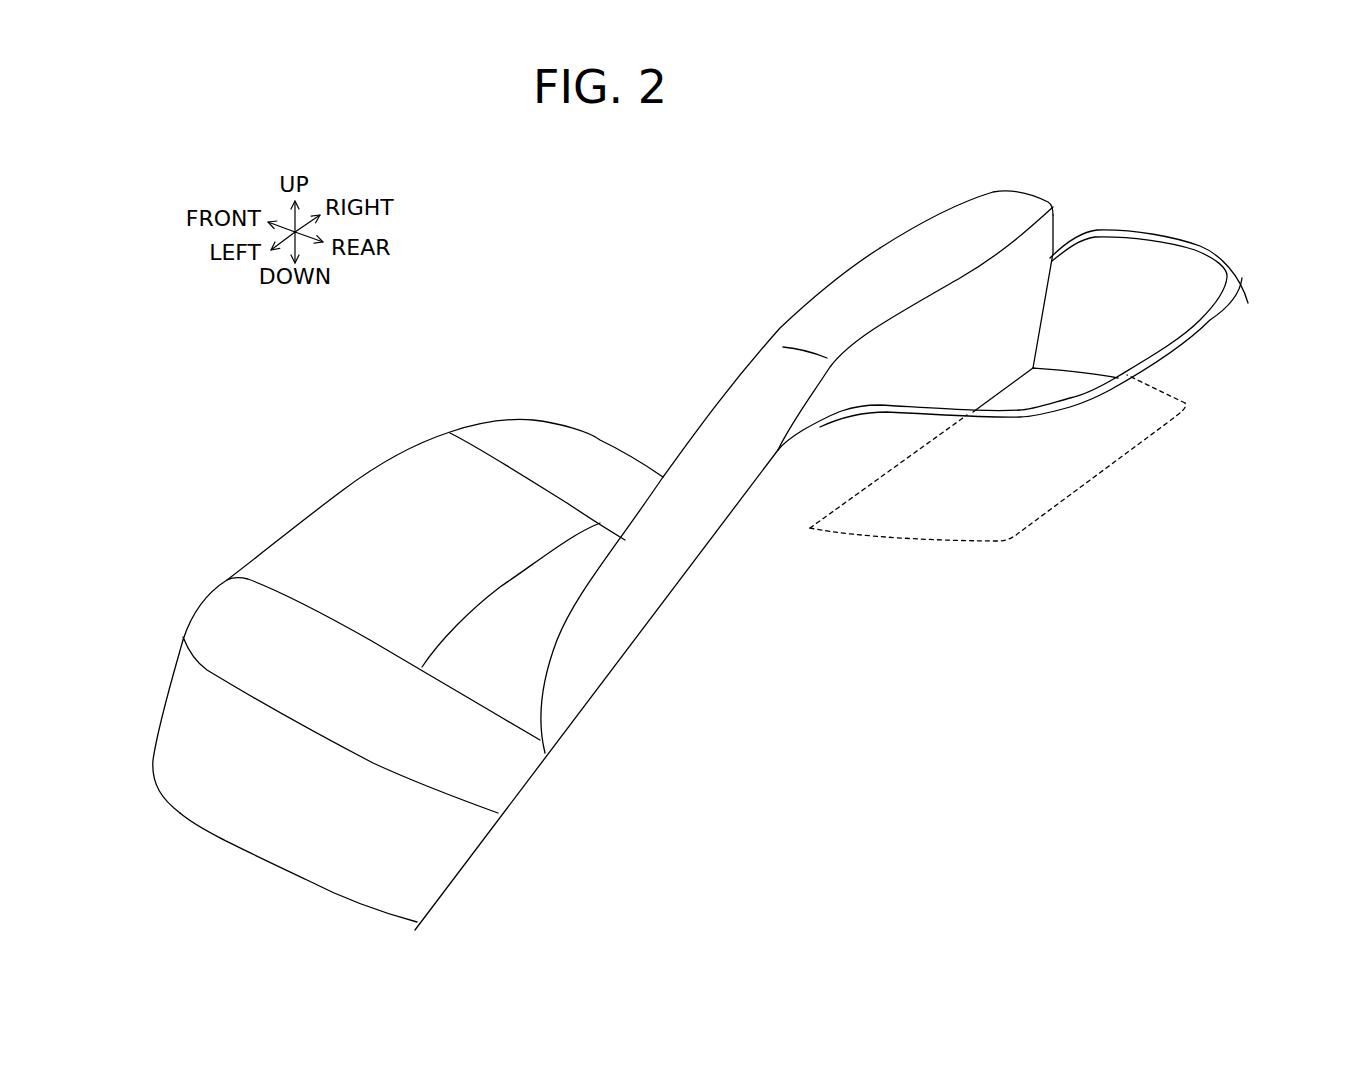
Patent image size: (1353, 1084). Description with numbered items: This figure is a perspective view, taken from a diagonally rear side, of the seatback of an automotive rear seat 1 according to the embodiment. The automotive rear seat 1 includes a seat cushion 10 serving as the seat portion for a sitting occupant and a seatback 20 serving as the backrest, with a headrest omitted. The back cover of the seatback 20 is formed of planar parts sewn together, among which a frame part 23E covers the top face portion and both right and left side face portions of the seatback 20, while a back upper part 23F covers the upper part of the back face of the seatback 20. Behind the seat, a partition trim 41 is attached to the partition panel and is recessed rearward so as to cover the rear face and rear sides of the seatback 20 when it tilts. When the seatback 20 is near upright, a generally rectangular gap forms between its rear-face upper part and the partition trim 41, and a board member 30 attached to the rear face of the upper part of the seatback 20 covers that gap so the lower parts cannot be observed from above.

The automotive rear seat 1 is at (829, 216).
The seat cushion 10 is at (532, 435).
The seatback 20 is at (728, 382).
The frame part 23E is at (1005, 213).
The back upper part 23F is at (950, 328).
The board member 30 is at (953, 502).
The partition trim 41 is at (1168, 270).